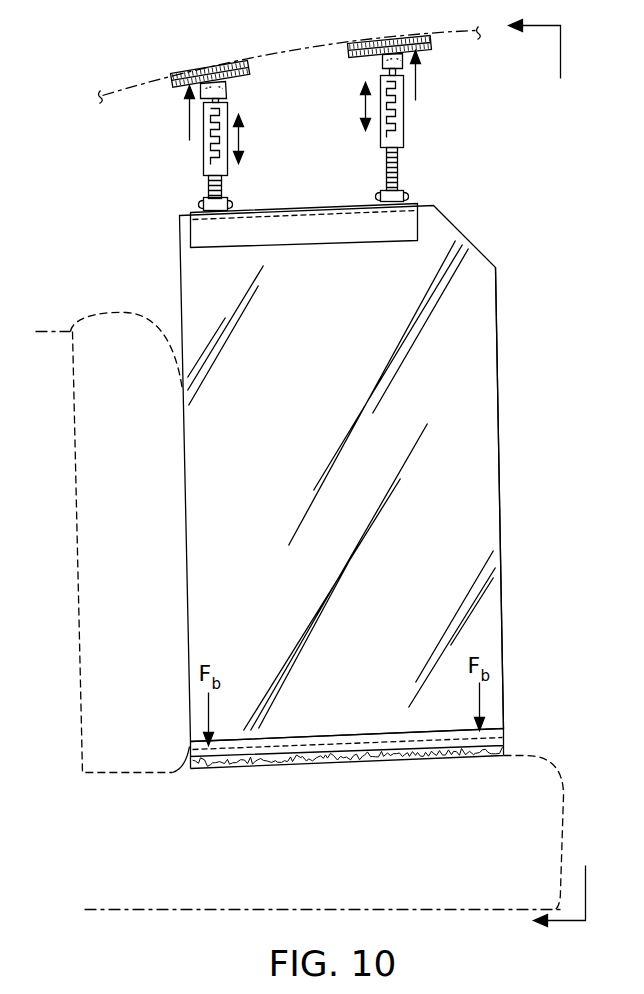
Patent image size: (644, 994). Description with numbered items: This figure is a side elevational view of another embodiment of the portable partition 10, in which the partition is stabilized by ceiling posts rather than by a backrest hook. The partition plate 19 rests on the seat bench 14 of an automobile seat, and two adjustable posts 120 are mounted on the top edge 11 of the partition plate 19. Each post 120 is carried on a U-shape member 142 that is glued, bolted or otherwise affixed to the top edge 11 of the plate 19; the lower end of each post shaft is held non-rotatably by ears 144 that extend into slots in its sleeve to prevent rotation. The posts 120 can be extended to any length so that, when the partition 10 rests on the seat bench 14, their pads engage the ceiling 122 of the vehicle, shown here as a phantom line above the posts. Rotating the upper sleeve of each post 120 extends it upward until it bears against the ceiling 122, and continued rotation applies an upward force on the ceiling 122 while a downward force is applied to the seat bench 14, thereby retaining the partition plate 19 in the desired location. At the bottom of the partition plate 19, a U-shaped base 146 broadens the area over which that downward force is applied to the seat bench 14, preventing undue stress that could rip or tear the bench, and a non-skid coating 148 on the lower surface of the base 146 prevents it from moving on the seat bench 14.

The portable partition 10 is at (309, 372).
The top edge 11 is at (565, 477).
The seat bench 14 is at (422, 820).
The partition plate 19 is at (487, 359).
The post 120 is at (170, 155).
The ceiling 122 is at (304, 49).
The U-shape member 142 is at (337, 241).
The ears 144 is at (407, 199).
The U-shaped base 146 is at (363, 740).
The non-skid coating 148 is at (503, 755).